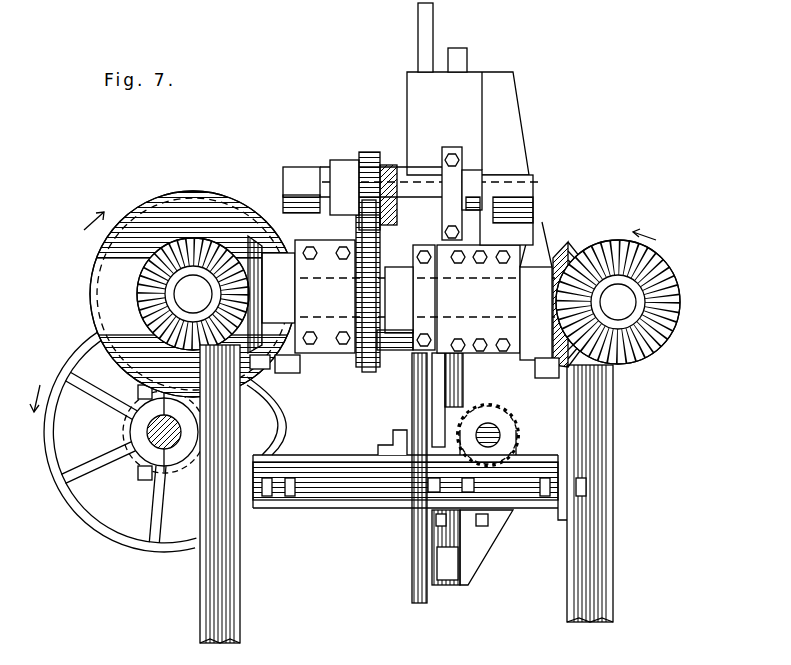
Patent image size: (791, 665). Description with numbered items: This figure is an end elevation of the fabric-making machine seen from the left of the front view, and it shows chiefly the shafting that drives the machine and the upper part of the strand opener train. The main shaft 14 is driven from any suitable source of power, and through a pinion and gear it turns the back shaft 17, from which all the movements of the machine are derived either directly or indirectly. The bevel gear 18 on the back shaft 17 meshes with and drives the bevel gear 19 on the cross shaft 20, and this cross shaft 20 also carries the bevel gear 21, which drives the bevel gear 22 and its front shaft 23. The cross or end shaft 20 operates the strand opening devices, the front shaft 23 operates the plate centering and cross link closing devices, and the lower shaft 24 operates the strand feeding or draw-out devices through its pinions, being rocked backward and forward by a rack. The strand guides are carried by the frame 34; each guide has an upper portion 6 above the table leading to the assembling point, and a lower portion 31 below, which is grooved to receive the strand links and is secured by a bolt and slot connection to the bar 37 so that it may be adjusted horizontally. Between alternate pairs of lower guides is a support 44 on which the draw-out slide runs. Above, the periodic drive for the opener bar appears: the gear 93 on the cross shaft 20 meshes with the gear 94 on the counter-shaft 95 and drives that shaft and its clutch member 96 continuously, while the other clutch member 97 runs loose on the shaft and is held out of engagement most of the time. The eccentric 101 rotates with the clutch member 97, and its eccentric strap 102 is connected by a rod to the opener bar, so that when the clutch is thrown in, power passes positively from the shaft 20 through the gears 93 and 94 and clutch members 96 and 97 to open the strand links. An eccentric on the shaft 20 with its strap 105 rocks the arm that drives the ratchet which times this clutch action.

The upper portion of strand guide 6 is at (420, 30).
The frame 34 is at (462, 58).
The counter-shaft 95 is at (283, 183).
The gear 94 is at (358, 183).
The clutch member 96 is at (387, 170).
The clutch member 97 is at (412, 177).
The eccentric strap 102 is at (452, 168).
The eccentric 101 is at (480, 180).
The bevel gear 19 is at (241, 246).
The back shaft 17 is at (178, 290).
The bevel gear 18 is at (142, 297).
The main shaft 14 is at (147, 433).
The gear 93 is at (368, 372).
The strap 105 is at (425, 309).
The cross shaft 20 is at (547, 277).
The bevel gear 21 is at (576, 262).
The bevel gear 22 is at (665, 280).
The front shaft 23 is at (623, 312).
The lower shaft 24 is at (496, 433).
The bar 37 is at (398, 446).
The lower portion of strand guide 31 is at (411, 555).
The support 44 is at (438, 585).